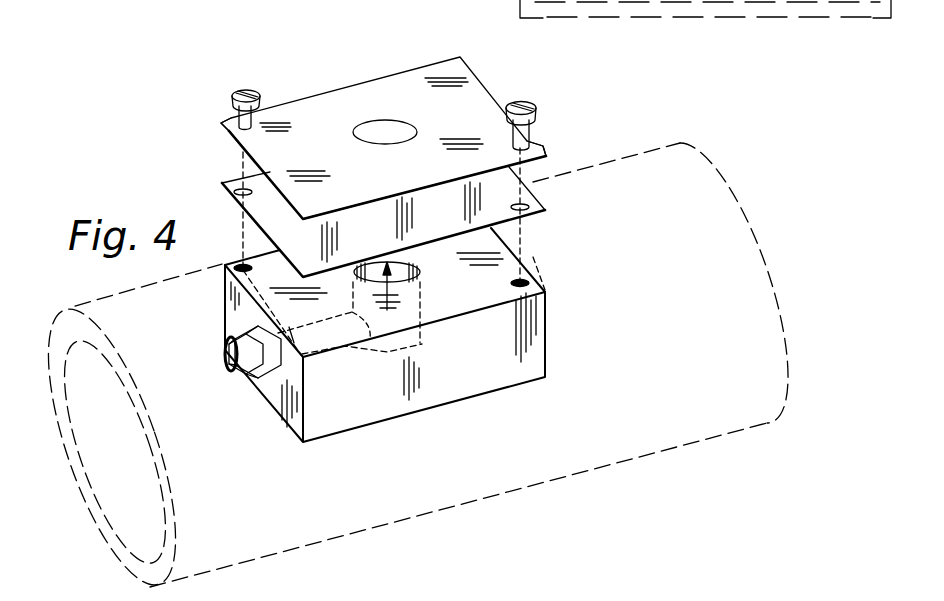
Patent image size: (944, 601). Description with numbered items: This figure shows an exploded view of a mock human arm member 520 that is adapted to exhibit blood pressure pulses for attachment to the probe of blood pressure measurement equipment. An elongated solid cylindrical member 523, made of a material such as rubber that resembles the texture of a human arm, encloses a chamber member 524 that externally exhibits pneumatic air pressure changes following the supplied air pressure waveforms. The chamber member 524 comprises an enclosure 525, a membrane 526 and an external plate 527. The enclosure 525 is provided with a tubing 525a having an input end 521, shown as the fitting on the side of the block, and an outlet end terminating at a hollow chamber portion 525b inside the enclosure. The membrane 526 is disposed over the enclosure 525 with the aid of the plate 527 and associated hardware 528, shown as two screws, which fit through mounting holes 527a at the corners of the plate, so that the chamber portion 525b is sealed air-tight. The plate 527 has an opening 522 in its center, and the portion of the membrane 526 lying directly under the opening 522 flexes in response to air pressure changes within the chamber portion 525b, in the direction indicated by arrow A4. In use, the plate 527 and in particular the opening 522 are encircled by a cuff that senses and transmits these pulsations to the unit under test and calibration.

The mock human arm member 520 is at (757, 103).
The input end 521 is at (263, 372).
The opening 522 is at (384, 119).
The elongated solid cylindrical member 523 is at (772, 336).
The chamber member 524 is at (538, 248).
The enclosure 525 is at (547, 318).
The tubing 525a is at (338, 338).
The hollow chamber portion 525b is at (420, 318).
The membrane 526 is at (490, 192).
The external plate 527 is at (344, 88).
The mounting holes 527a is at (228, 124).
The associated hardware 528 is at (237, 92).
The arrow A4 is at (388, 290).